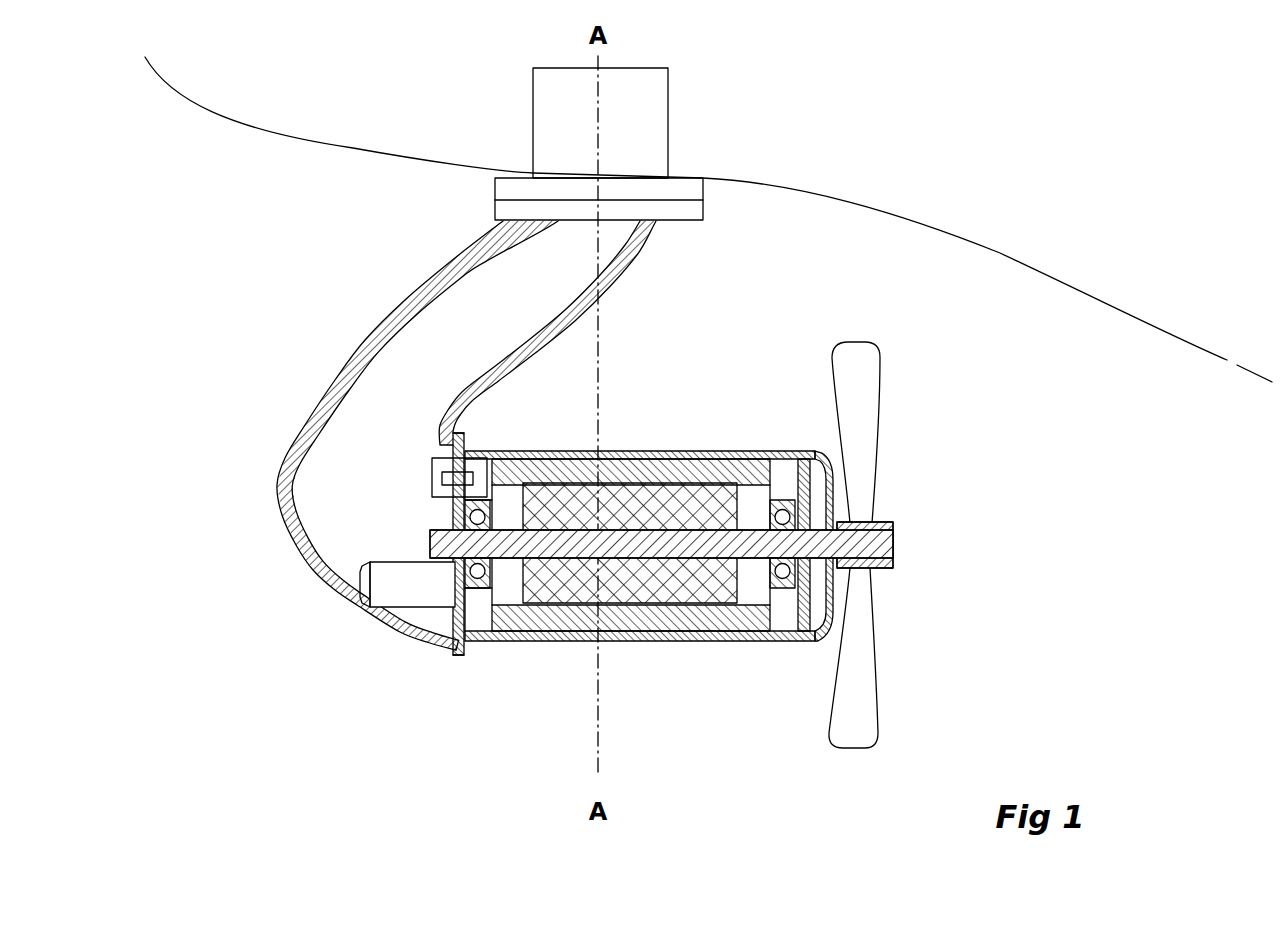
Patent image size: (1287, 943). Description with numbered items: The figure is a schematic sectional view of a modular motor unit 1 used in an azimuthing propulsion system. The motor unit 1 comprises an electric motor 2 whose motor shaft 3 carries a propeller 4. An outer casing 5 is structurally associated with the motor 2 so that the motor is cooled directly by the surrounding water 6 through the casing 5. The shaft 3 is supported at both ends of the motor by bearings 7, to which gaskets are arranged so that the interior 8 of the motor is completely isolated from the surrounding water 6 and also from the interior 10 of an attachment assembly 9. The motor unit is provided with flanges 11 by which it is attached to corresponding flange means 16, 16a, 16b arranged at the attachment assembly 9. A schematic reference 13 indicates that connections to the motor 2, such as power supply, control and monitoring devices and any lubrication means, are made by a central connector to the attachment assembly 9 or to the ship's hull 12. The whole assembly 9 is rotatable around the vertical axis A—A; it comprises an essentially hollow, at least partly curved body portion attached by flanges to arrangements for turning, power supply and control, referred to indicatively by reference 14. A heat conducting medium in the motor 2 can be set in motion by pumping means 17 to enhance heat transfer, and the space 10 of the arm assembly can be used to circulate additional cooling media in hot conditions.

The modular motor unit 1 is at (912, 461).
The electric motor 2 is at (688, 597).
The motor shaft 3 is at (742, 573).
The propeller 4 is at (867, 670).
The outer casing 5 is at (743, 455).
The surrounding water 6 is at (1084, 593).
The bearings 7 is at (482, 590).
The interior of the motor 8 is at (505, 578).
The attachment assembly 9 is at (284, 543).
The interior of the attachment assembly 10 is at (357, 447).
The flanges 11 is at (465, 655).
The ship's hull 12 is at (272, 108).
The central connector 13 is at (432, 458).
The arrangements for turning, power supply and control 14 is at (640, 133).
The flange means 16 is at (450, 651).
The flange means 16a is at (453, 652).
The flange means 16b is at (458, 432).
The pumping means 17 is at (410, 588).